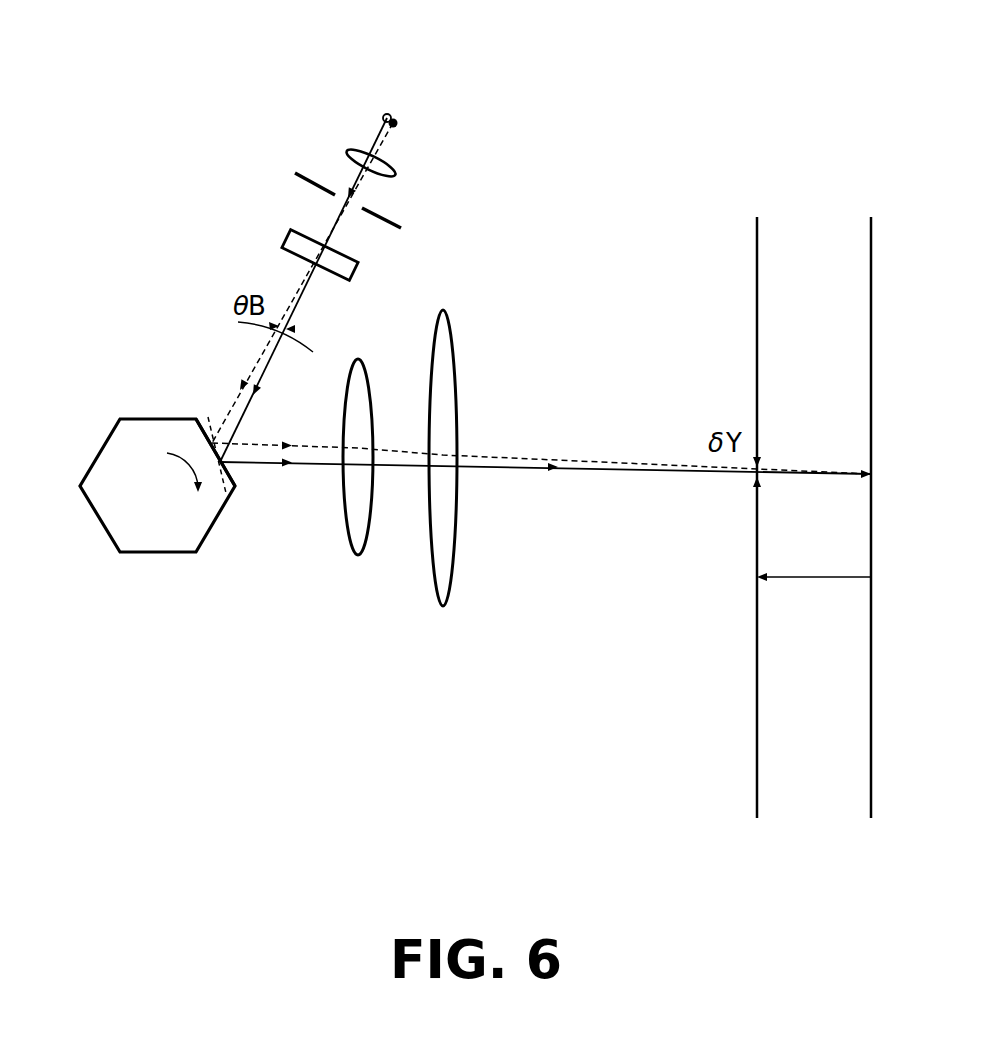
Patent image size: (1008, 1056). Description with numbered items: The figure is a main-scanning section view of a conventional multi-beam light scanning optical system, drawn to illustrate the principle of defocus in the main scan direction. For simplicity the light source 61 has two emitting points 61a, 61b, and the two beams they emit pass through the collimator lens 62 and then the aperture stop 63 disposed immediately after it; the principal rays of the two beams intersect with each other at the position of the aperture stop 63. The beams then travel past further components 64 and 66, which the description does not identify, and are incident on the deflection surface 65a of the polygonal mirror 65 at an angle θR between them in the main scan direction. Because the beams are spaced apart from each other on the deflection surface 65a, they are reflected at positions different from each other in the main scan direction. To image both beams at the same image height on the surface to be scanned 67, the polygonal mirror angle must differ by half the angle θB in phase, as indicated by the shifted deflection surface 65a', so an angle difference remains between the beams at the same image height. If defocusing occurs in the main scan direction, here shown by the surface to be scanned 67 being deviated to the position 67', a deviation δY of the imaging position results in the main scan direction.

The light source 61 is at (431, 74).
The emitting point 61a is at (398, 125).
The emitting point 61b is at (382, 117).
The collimator lens 62 is at (394, 174).
The aperture stop 63 is at (385, 223).
The cylindrical lens 64 is at (283, 238).
The polygonal mirror 65 is at (125, 437).
The deflection surface 65a is at (239, 502).
The deflection surface at shifted phase 65a' is at (182, 412).
The scanning lens 66 is at (477, 610).
The surface to be scanned 67 is at (833, 502).
The deviated position of surface to be scanned 67' is at (717, 502).